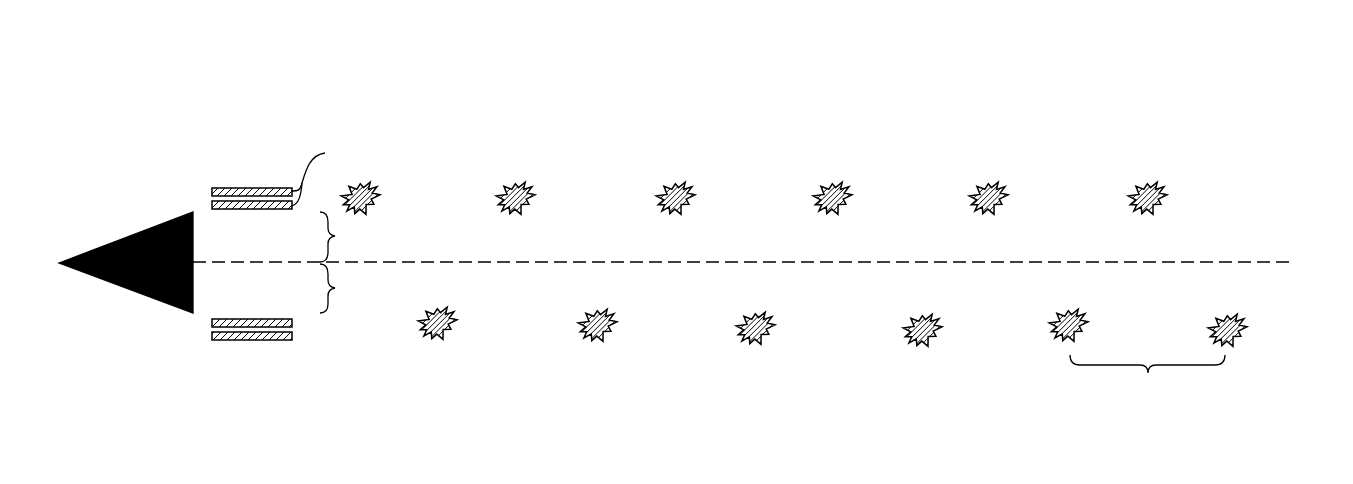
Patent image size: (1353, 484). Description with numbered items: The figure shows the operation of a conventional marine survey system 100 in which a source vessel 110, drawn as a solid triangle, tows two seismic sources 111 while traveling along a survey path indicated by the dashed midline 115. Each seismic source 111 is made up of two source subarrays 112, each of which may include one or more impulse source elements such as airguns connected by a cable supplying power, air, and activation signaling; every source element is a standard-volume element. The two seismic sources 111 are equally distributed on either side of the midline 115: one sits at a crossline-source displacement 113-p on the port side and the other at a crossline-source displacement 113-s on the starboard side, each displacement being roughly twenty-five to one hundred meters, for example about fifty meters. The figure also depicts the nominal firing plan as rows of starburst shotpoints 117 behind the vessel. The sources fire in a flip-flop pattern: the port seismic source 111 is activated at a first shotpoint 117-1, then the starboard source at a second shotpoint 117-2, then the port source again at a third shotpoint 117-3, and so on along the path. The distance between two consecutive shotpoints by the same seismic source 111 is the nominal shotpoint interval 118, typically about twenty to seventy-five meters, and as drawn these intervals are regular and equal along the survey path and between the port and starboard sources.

The marine survey system 100 is at (1247, 83).
The source vessel 110 is at (108, 219).
The seismic source 111 is at (233, 178).
The source subarray 112 is at (327, 173).
The crossline-source displacement to the starboard side 113-s is at (359, 237).
The crossline-source displacement to the port side 113-p is at (359, 288).
The midline 115 is at (447, 261).
The shotpoint 117 is at (677, 177).
The first shotpoint 117-1 is at (1245, 347).
The second shotpoint 117-2 is at (1143, 177).
The third shotpoint 117-3 is at (1055, 347).
The nominal shotpoint interval 118 is at (1147, 382).